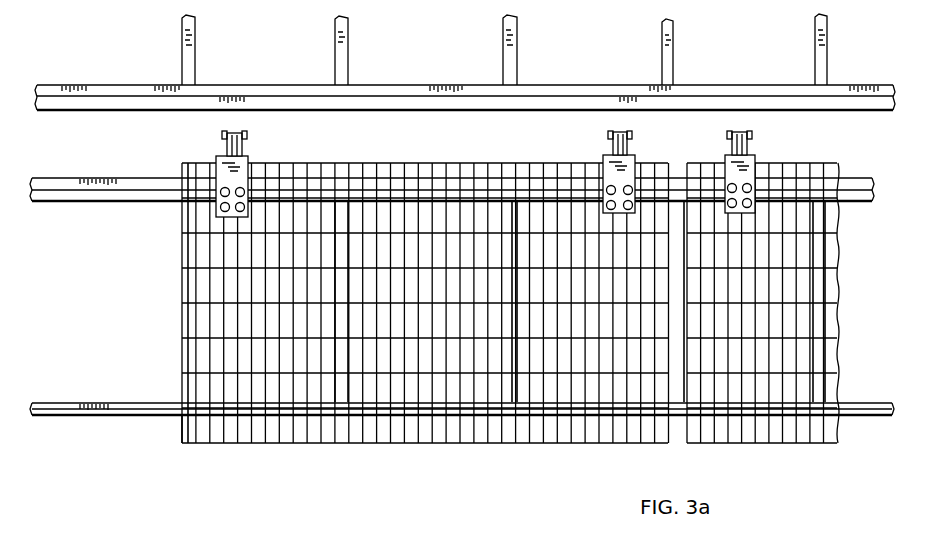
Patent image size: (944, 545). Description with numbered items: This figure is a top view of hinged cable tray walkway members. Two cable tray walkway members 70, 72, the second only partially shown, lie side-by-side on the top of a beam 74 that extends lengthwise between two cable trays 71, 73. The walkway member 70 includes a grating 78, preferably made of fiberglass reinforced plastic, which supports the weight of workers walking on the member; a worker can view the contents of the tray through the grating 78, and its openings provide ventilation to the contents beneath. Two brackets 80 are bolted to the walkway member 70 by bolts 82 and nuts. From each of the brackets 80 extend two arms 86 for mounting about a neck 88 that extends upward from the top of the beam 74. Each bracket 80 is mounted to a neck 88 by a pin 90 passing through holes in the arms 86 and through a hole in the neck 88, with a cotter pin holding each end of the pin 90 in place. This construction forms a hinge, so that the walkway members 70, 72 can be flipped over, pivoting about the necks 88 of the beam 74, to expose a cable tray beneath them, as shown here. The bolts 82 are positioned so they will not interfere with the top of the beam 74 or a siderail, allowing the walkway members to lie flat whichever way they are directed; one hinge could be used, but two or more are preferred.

The cable tray walkway member 70 is at (182, 425).
The cable tray 71 is at (118, 403).
The cable tray walkway member 72 is at (815, 325).
The cable tray 73 is at (133, 86).
The beam 74 is at (702, 123).
The grating 78 is at (250, 443).
The bracket 80 is at (222, 168).
The bolt 82 is at (245, 206).
The arm 86 is at (240, 132).
The neck 88 is at (233, 132).
The pin 90 is at (248, 137).